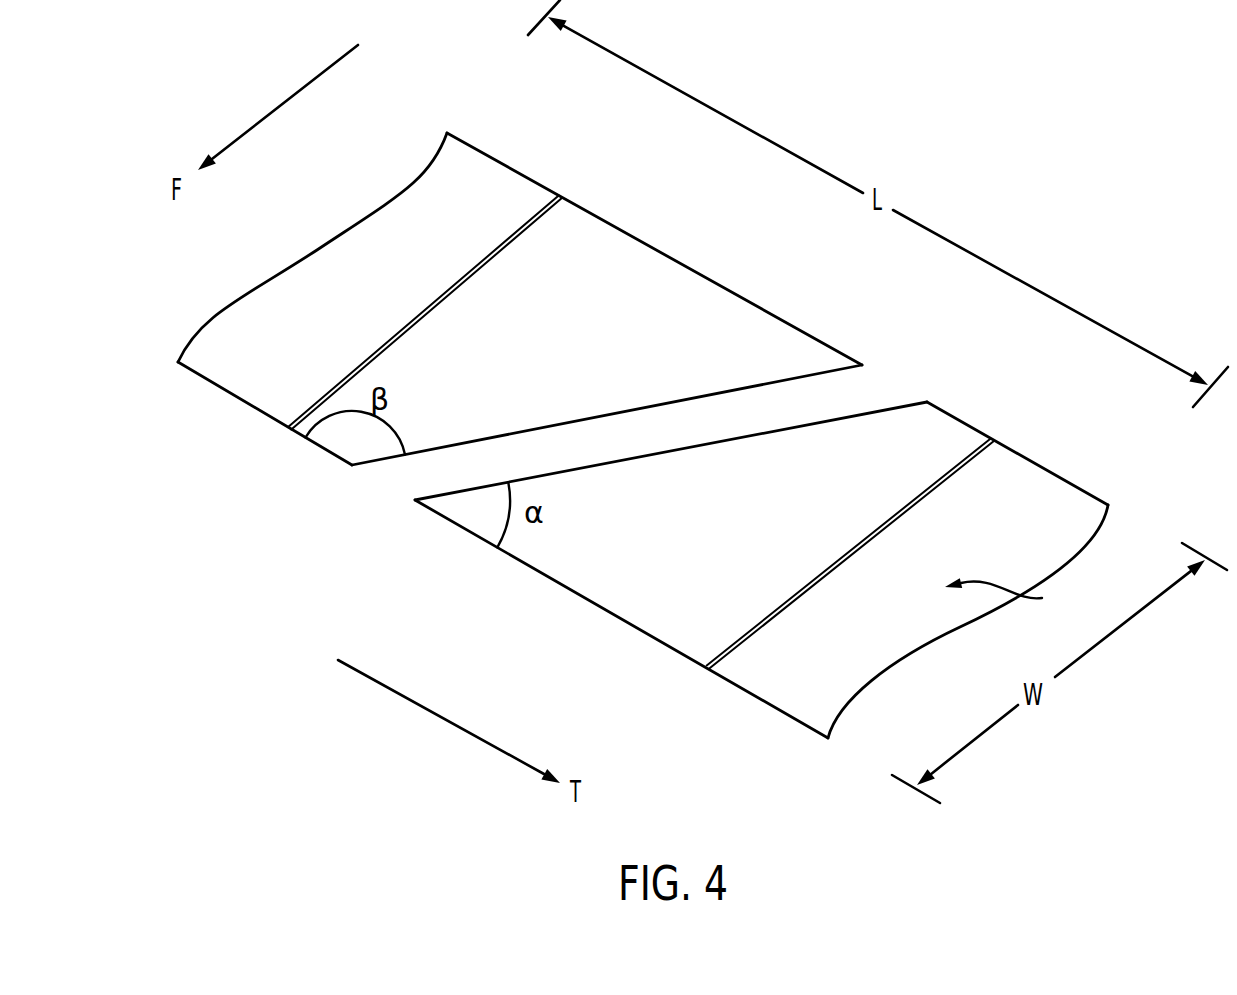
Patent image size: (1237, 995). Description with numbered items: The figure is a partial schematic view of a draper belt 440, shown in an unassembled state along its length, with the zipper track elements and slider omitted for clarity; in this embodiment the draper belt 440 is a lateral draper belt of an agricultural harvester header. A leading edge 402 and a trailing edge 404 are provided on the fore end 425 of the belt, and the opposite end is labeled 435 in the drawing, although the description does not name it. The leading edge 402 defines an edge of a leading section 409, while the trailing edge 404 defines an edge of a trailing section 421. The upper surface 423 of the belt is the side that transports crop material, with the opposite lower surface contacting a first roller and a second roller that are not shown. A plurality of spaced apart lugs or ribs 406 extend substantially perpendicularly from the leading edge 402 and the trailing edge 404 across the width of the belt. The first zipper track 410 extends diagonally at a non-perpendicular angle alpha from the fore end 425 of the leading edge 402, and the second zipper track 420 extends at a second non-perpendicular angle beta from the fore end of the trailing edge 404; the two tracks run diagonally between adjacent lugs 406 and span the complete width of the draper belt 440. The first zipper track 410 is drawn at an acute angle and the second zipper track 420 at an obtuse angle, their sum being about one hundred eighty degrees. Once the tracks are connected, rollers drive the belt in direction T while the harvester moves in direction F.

The leading edge 402 is at (540, 575).
The trailing edge 404 is at (343, 467).
The lugs or ribs 406 is at (487, 258).
The leading section 409 is at (692, 537).
The first zipper track 410 is at (794, 521).
The second zipper track 420 is at (520, 336).
The trailing section 421 is at (573, 340).
The upper surface 423 is at (365, 248).
The fore end 425 is at (240, 400).
The end edge of second tile portion 435 is at (1108, 505).
The draper belt 440 is at (1011, 598).